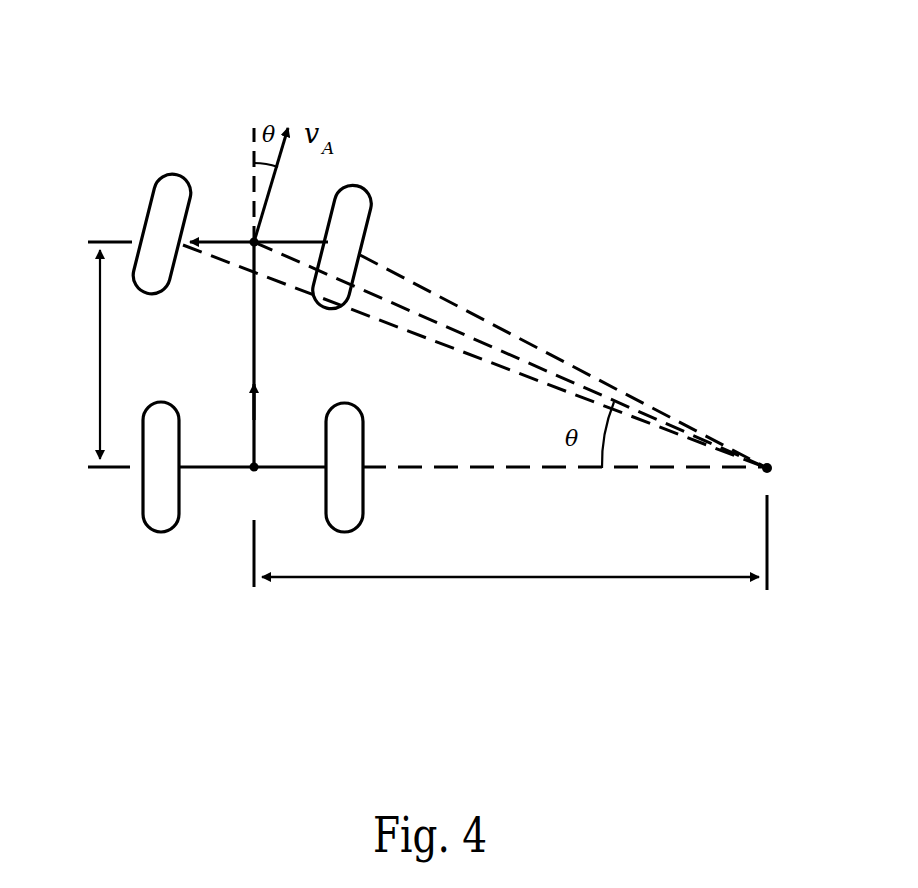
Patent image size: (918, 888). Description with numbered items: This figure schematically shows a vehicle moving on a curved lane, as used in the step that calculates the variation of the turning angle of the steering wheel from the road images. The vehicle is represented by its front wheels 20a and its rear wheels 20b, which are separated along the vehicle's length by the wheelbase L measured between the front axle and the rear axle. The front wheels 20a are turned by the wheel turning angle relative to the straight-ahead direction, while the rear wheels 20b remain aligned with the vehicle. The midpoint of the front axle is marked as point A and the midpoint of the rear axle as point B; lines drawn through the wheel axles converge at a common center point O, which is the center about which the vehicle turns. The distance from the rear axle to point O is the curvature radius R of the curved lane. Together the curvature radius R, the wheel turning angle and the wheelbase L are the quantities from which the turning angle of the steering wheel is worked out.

The front wheels 20a is at (177, 173).
The rear wheels 20b is at (148, 520).
The front axle center point A is at (243, 230).
The rear axle center point B is at (253, 483).
The turning center O is at (781, 480).
The wheelbase L is at (100, 354).
The curvature radius R is at (510, 542).